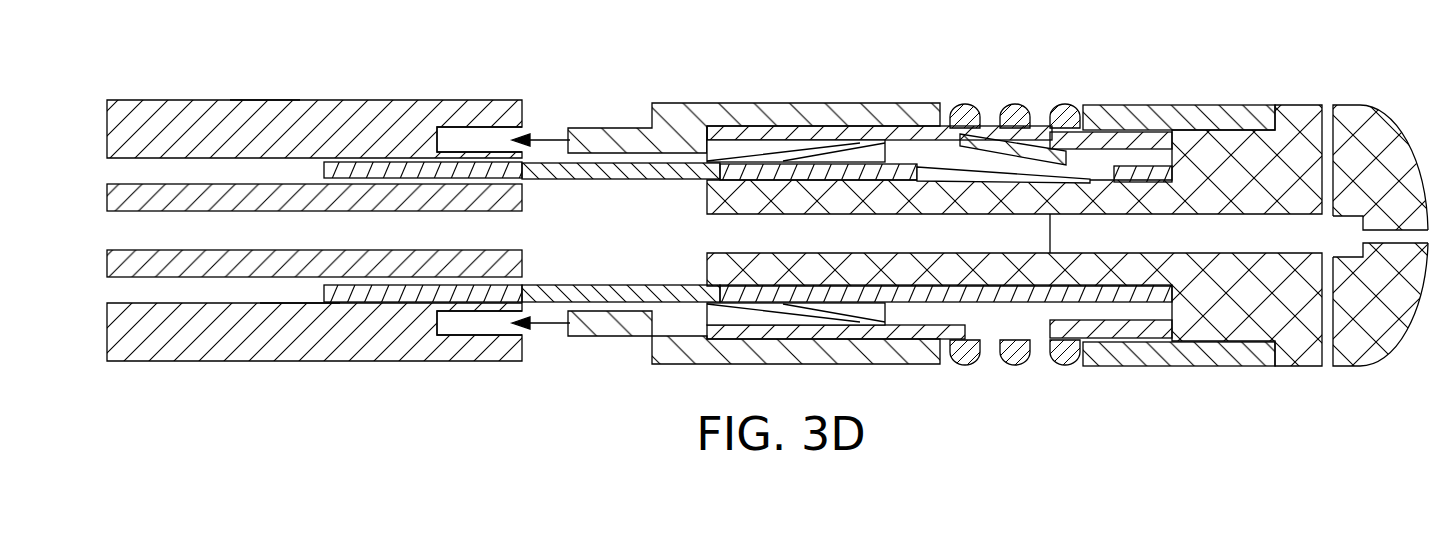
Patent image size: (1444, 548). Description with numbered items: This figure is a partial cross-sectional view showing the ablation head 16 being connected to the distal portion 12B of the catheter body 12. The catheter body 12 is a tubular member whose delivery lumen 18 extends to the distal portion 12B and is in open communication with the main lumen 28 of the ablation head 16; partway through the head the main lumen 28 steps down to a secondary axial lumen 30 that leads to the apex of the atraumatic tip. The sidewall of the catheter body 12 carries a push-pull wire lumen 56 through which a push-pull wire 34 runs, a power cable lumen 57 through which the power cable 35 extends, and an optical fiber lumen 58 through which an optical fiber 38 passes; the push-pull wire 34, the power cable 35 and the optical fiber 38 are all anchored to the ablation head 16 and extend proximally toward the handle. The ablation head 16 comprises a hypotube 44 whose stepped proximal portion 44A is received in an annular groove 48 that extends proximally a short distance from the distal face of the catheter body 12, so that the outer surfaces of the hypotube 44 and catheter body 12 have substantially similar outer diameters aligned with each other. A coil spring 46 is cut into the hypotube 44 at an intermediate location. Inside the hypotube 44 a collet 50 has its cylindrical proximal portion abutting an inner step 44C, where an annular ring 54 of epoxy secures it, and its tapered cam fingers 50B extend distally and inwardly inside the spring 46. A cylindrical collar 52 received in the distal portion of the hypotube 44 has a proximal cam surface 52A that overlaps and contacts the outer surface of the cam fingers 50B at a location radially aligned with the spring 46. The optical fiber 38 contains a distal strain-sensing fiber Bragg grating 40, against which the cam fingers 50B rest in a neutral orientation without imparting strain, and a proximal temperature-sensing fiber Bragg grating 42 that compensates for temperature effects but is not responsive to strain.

The catheter body 12 is at (293, 190).
The distal portion of the catheter body 12B is at (237, 90).
The ablation head 16 is at (1355, 118).
The delivery lumen 18 is at (450, 255).
The main lumen 28 is at (1210, 222).
The secondary axial lumen 30 is at (1393, 250).
The push-pull wire 34 is at (375, 292).
The power cable 35 is at (510, 298).
The optical fiber 38 is at (396, 170).
The strain-sensing fiber Bragg grating 40 is at (983, 178).
The temperature-sensing fiber Bragg grating 42 is at (547, 170).
The hypotube 44 is at (760, 115).
The stepped proximal portion of the hypotube 44A is at (692, 345).
The hypotube step 44C is at (705, 128).
The coil spring 46 is at (1008, 358).
The annular groove 48 is at (478, 140).
The collet 50 is at (893, 133).
The tapered cam fingers 50B is at (1016, 154).
The collar 52 is at (1132, 345).
The proximal cam surface 52A is at (1062, 142).
The annular ring of epoxy 54 is at (822, 150).
The push-pull wire lumen 56 is at (228, 304).
The power cable lumen 57 is at (296, 304).
The optical fiber lumen 58 is at (188, 170).